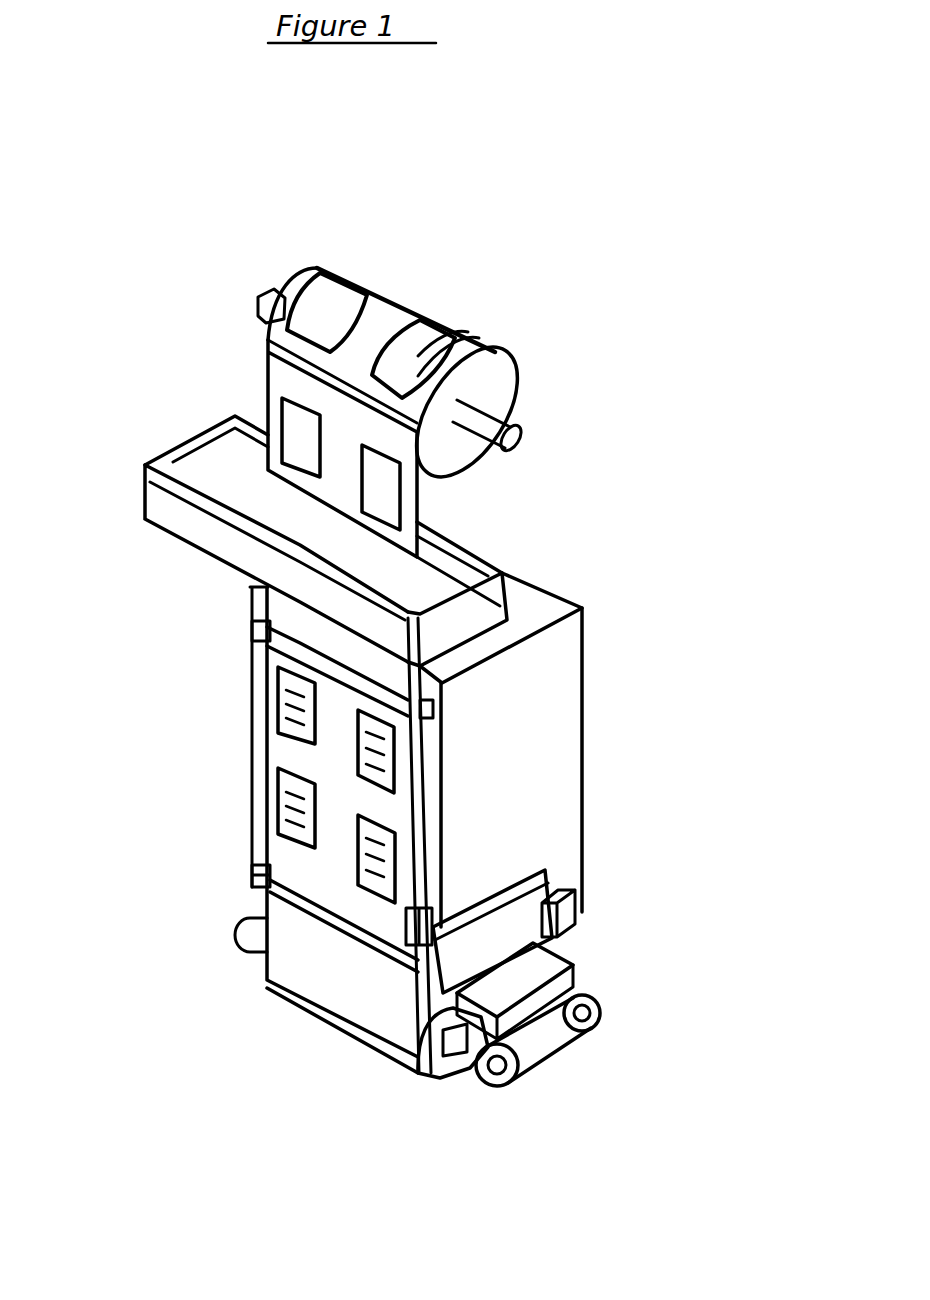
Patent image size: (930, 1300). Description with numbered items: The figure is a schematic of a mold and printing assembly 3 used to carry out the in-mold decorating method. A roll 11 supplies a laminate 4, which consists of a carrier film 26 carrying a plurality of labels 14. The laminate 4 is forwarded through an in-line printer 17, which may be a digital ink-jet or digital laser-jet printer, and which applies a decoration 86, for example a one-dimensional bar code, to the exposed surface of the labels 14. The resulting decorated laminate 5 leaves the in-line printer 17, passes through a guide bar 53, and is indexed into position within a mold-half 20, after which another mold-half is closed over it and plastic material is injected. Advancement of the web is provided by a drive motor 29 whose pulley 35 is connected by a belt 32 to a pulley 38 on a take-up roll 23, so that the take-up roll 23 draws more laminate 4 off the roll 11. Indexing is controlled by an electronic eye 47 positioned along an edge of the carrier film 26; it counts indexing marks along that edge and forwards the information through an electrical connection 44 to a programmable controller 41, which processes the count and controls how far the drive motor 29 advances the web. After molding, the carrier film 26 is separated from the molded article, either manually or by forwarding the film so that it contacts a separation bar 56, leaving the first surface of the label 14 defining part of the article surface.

The mold and printing assembly 3 is at (124, 1168).
The laminate 4 is at (432, 280).
The decorated laminate 5 is at (222, 793).
The roll 11 is at (497, 373).
The labels 14 is at (325, 298).
The in-line printer 17 is at (185, 459).
The mold-half 20 is at (560, 708).
The take-up roll 23 is at (443, 1076).
The carrier film 26 is at (274, 381).
The drive motor 29 is at (566, 950).
The belt 32 is at (537, 1064).
The pulley 35 is at (600, 997).
The pulley 38 is at (493, 1088).
The programmable controller 41 is at (578, 917).
The electrical connection 44 is at (542, 869).
The electronic eye 47 is at (434, 908).
The guide bar 53 is at (253, 641).
The separation bar 56 is at (252, 880).
The decoration 86 is at (278, 728).